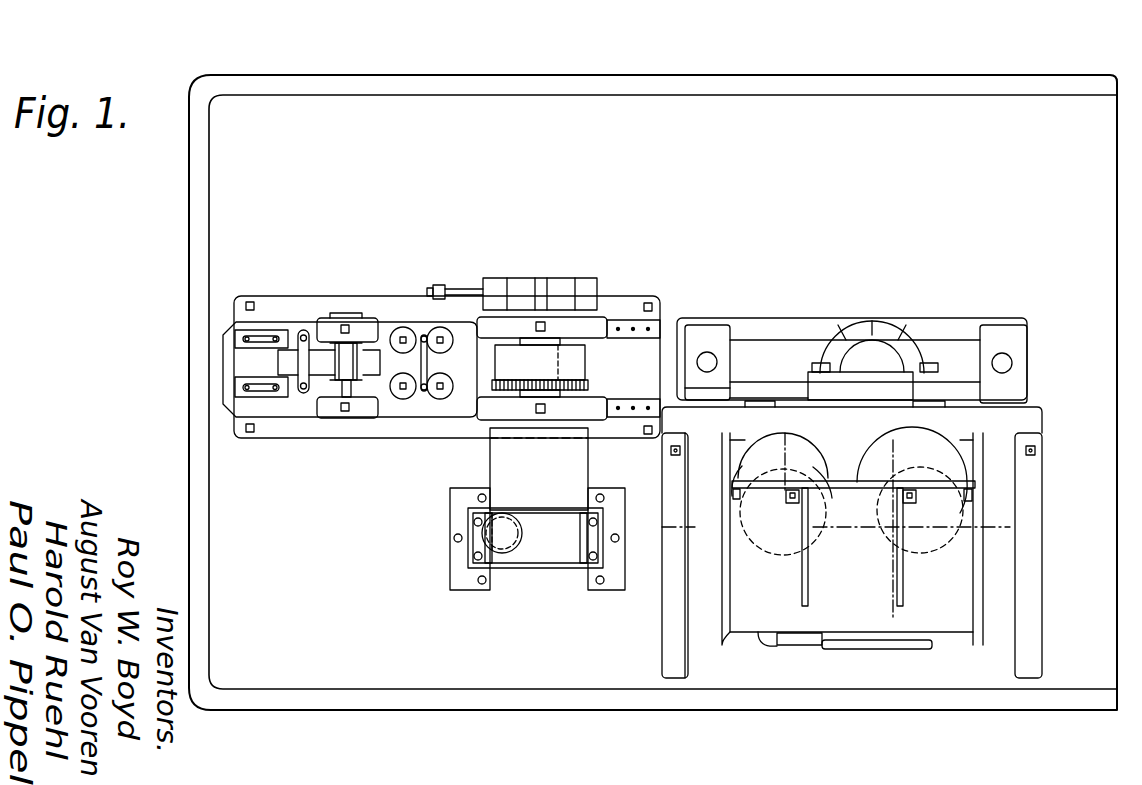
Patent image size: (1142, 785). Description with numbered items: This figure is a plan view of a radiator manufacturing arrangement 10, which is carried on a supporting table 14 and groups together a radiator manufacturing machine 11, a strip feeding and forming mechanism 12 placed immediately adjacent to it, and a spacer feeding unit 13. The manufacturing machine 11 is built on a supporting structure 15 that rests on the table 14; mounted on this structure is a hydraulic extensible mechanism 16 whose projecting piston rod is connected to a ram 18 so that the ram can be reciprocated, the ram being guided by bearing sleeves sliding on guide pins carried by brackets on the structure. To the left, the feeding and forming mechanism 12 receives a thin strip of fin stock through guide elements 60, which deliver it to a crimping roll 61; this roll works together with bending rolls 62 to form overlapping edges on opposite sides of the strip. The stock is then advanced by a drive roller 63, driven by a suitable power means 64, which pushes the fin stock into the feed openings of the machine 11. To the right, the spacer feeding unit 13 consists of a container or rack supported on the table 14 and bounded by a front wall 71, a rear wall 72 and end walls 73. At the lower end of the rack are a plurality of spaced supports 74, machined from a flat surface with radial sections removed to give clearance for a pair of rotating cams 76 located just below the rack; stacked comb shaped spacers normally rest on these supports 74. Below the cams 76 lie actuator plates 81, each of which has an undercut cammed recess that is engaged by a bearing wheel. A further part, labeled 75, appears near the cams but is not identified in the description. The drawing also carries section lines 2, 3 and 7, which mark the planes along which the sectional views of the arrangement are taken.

The radiator manufacturing arrangement 10 is at (364, 718).
The radiator manufacturing machine 11 is at (844, 646).
The strip feeding and forming mechanism 12 is at (386, 456).
The spacer feeding unit 13 is at (760, 608).
The supporting table 14 is at (488, 672).
The supporting structure 15 is at (1034, 462).
The hydraulic extensible mechanism 16 is at (872, 332).
The ram 18 is at (786, 350).
The guide elements 60 is at (252, 378).
The crimping roll 61 is at (345, 360).
The bending rolls 62 is at (441, 396).
The drive roller 63 is at (580, 361).
The power means 64 is at (537, 509).
The front wall 71 is at (932, 416).
The rear wall 72 is at (952, 486).
The end walls 73 is at (690, 527).
The spaced supports 74 is at (745, 440).
The discs 75 is at (740, 490).
The rotating cams 76 is at (912, 452).
The actuator plates 81 is at (778, 552).
The section line 2- 2 is at (1128, 746).
The section line 3- 3 is at (668, 267).
The section line 7- 7 is at (770, 421).